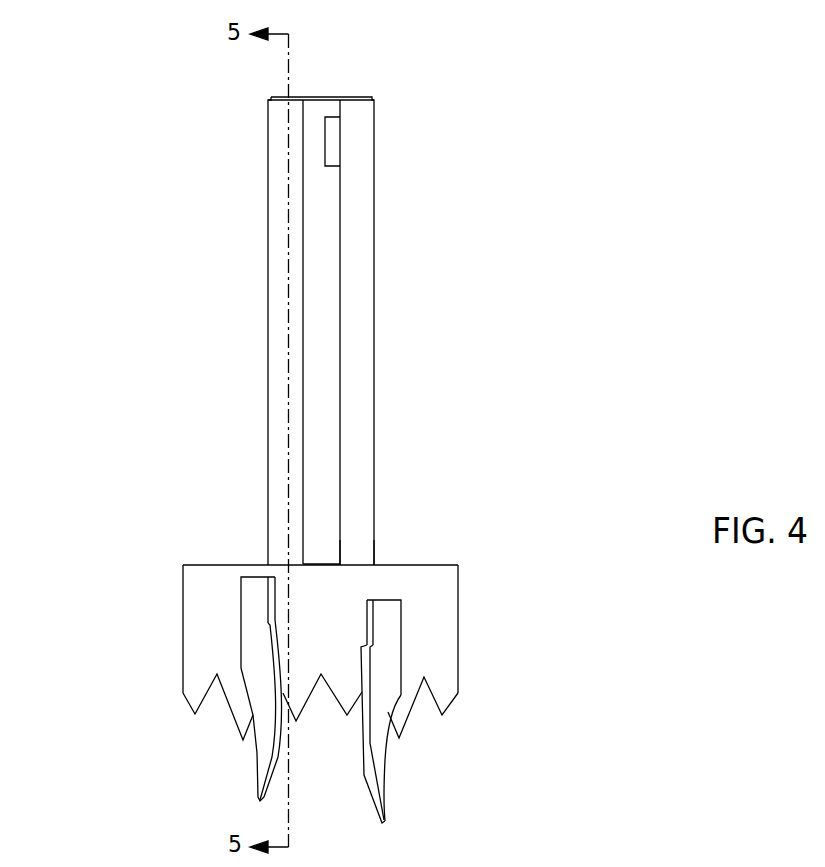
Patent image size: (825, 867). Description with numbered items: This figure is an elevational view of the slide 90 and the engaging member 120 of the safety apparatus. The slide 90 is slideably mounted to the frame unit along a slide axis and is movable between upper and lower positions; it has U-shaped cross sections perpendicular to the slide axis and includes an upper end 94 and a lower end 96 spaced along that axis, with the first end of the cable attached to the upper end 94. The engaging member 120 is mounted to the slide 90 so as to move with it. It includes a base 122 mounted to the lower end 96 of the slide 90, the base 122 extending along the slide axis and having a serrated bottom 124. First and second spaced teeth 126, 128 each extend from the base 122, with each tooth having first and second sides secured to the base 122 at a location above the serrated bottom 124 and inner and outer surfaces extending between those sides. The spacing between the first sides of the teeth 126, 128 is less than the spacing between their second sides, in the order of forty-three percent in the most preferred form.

The slide 90 is at (363, 262).
The upper end 94 is at (361, 150).
The lower end 96 is at (353, 538).
The engaging member 120 is at (467, 555).
The base 122 is at (438, 615).
The serrated bottom 124 is at (442, 692).
The first tooth 126 is at (263, 683).
The second tooth 128 is at (378, 710).